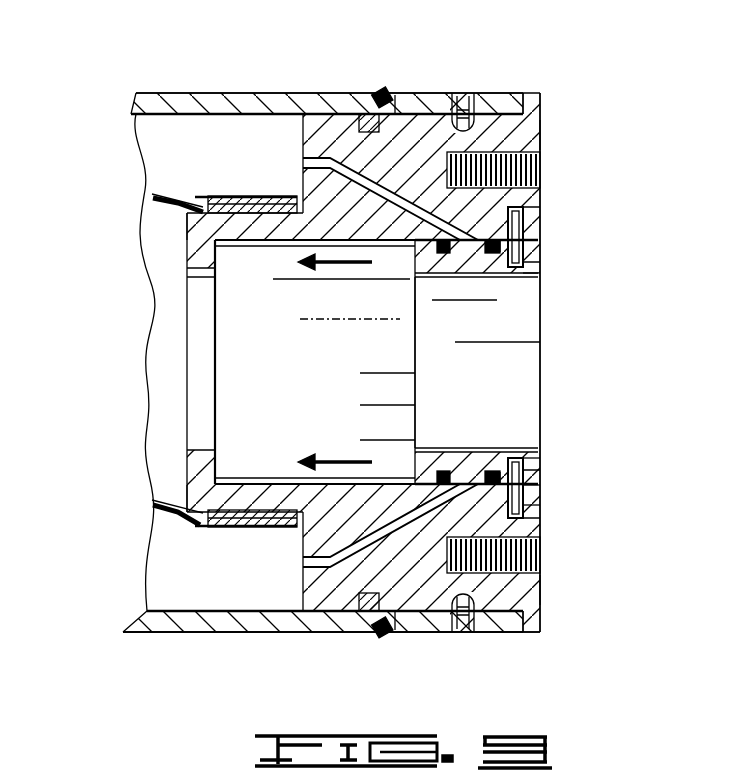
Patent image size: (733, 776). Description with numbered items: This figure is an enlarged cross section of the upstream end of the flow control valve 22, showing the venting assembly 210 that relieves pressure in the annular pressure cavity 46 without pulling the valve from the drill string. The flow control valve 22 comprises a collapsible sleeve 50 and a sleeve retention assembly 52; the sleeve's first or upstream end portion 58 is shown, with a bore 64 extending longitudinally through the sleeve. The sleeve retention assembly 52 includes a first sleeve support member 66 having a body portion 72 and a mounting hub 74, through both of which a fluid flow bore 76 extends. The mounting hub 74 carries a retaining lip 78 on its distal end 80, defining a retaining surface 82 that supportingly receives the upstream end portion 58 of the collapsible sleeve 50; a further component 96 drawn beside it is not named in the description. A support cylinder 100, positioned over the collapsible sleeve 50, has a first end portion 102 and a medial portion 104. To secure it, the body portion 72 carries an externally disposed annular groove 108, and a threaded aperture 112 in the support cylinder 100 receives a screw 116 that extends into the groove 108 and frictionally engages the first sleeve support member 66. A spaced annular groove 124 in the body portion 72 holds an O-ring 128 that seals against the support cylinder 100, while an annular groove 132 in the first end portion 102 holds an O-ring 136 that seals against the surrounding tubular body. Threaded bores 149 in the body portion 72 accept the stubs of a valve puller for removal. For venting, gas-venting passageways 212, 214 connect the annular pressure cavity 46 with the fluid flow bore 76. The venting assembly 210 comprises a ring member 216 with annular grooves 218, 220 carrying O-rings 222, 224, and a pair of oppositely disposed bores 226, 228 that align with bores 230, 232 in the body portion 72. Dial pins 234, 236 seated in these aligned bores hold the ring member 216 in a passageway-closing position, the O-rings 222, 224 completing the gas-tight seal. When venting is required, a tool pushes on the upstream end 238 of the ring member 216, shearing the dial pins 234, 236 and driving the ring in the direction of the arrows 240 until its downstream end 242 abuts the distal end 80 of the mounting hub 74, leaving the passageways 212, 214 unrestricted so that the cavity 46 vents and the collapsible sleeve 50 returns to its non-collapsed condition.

The flow control valve 22 is at (108, 625).
The annular pressure cavity 46 is at (165, 135).
The collapsible sleeve 50 is at (165, 198).
The sleeve retention assembly 52 is at (560, 133).
The first end portion 58 is at (218, 200).
The bore 64 is at (168, 365).
The first sleeve support member 66 is at (525, 215).
The body portion 72 is at (398, 105).
The mounting hub 74 is at (240, 250).
The fluid flow bore 76 is at (540, 345).
The retaining lip 78 is at (192, 208).
The distal end 80 is at (190, 262).
The retaining surface 82 is at (302, 244).
The seal ring 96 is at (250, 205).
The support cylinder 100 is at (270, 90).
The first end portion 102 is at (518, 108).
The medial portion 104 is at (163, 100).
The annular groove 108 is at (542, 115).
The threaded aperture 112 is at (462, 100).
The screw 116 is at (468, 125).
The annular groove 124 is at (283, 112).
The O-ring 128 is at (322, 162).
The annular groove 132 is at (382, 90).
The O-ring 136 is at (366, 115).
The threaded bores 149 is at (545, 168).
The venting assembly 210 is at (560, 262).
The gas-venting passageway 212 is at (400, 440).
The gas-venting passageway 214 is at (400, 319).
The ring member 216 is at (430, 285).
The annular groove 218 is at (495, 255).
The annular groove 220 is at (445, 255).
The O-ring 222 is at (488, 262).
The O-ring 224 is at (415, 300).
The bore 226 is at (525, 460).
The bore 228 is at (535, 275).
The bore 230 is at (525, 505).
The bore 232 is at (532, 207).
The dial pin 234 is at (525, 485).
The dial pin 236 is at (522, 240).
The upstream end 238 is at (525, 262).
The arrows 240 is at (350, 265).
The downstream end 242 is at (400, 373).